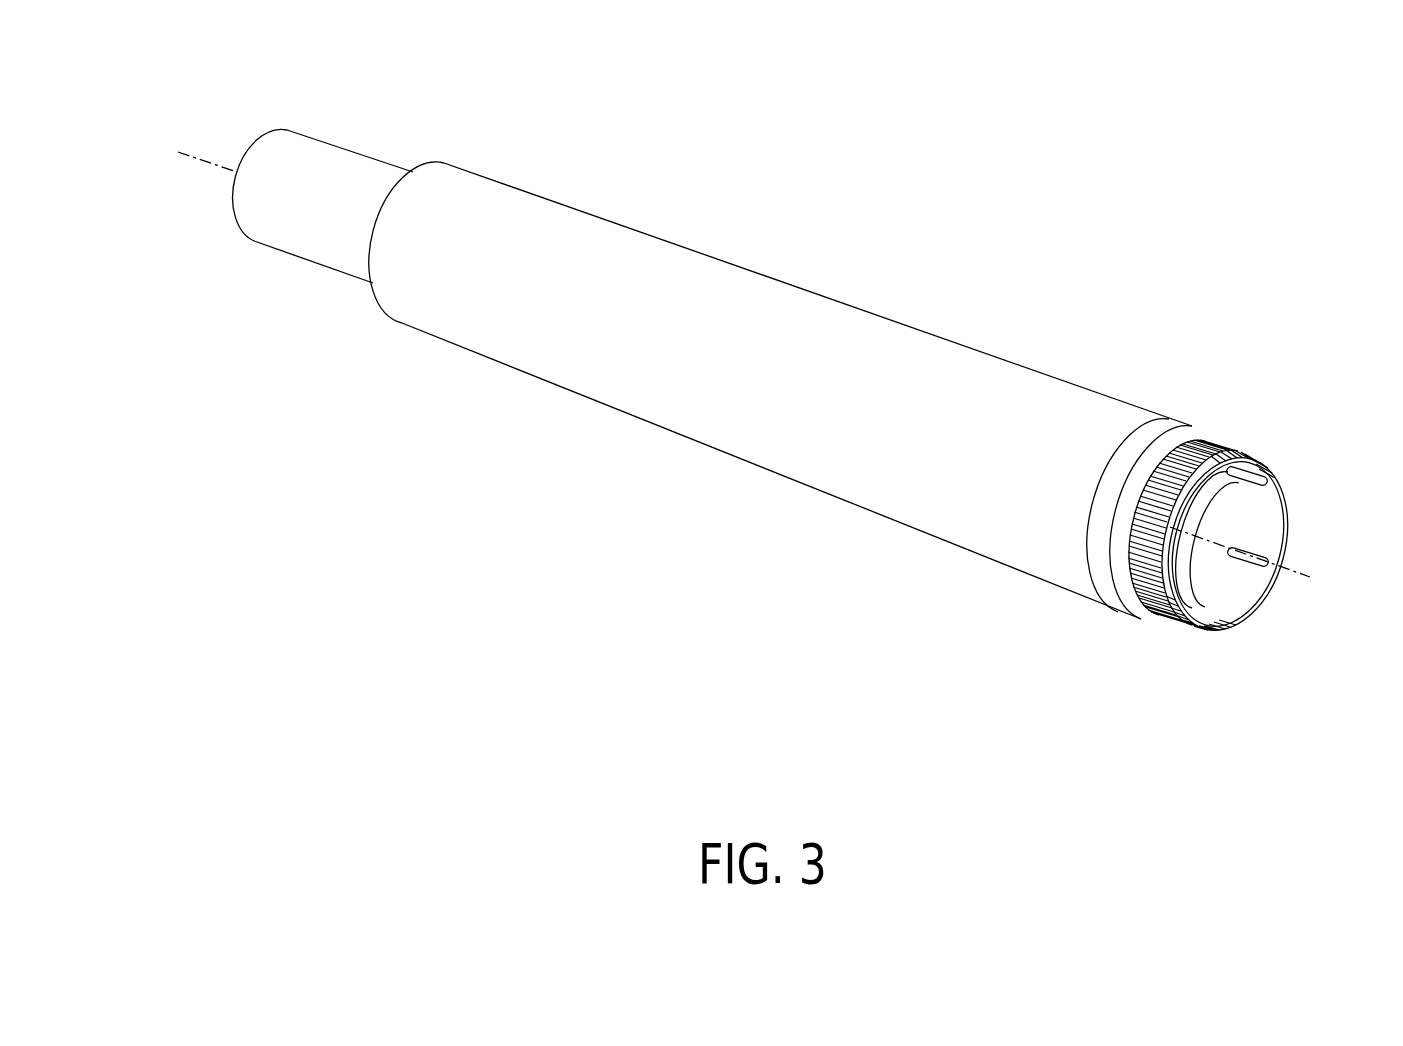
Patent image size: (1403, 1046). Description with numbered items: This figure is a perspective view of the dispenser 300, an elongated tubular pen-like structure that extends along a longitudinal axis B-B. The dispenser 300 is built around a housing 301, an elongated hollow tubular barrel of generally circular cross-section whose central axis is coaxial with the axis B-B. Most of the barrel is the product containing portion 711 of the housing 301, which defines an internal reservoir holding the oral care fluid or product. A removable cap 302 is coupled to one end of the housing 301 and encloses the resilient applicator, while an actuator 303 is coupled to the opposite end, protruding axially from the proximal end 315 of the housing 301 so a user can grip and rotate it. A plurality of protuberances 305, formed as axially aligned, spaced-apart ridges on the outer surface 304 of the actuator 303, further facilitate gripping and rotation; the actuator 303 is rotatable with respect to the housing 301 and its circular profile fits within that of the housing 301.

The dispenser 300 is at (930, 110).
The housing 301 is at (972, 363).
The removable cap 302 is at (352, 172).
The actuator 303 is at (1283, 452).
The outer surface 304 is at (1193, 443).
The protuberances 305 is at (1140, 618).
The proximal end 315 is at (1138, 427).
The product containing portion 711 is at (580, 227).